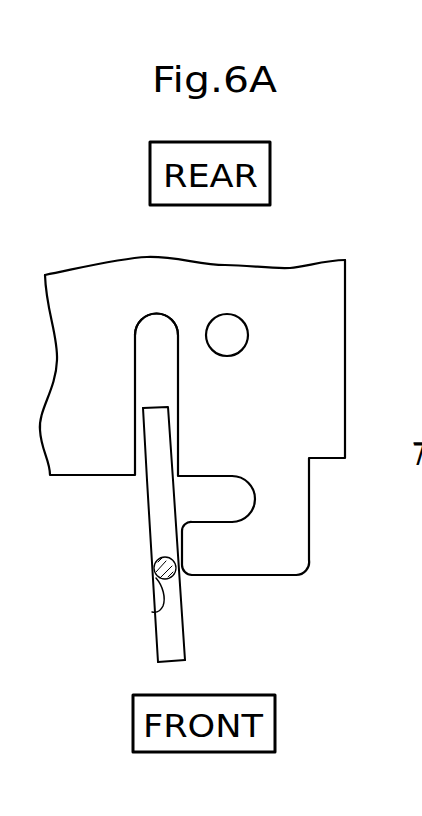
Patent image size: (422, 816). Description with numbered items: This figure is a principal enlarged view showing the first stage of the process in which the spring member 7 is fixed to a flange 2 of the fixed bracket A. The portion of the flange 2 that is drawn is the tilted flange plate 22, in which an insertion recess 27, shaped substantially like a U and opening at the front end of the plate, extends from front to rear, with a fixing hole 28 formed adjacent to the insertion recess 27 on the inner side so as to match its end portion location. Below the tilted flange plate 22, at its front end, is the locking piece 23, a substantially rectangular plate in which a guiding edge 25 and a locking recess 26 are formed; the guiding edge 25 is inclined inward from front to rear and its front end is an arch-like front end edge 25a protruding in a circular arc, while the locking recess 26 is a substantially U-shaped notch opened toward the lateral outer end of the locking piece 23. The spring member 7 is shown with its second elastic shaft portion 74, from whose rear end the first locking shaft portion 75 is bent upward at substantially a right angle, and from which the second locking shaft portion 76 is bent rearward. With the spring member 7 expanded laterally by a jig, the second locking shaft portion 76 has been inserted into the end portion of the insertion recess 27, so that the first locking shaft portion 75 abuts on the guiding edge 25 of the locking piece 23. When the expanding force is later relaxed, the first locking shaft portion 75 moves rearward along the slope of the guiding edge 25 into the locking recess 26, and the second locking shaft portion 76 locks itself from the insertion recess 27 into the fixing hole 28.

The flange 2 is at (229, 385).
The spring member 7 is at (145, 540).
The tilted flange plate 22 is at (270, 387).
The locking piece 23 is at (307, 567).
The guiding edge 25 is at (183, 547).
The arch-like front end edge 25a is at (180, 570).
The locking recess 26 is at (230, 508).
The insertion recess 27 is at (148, 360).
The fixing hole 28 is at (210, 335).
The second elastic shaft portion 74 is at (168, 650).
The first locking shaft portion 75 is at (152, 612).
The second locking shaft portion 76 is at (158, 493).
The fixed bracket A is at (292, 268).